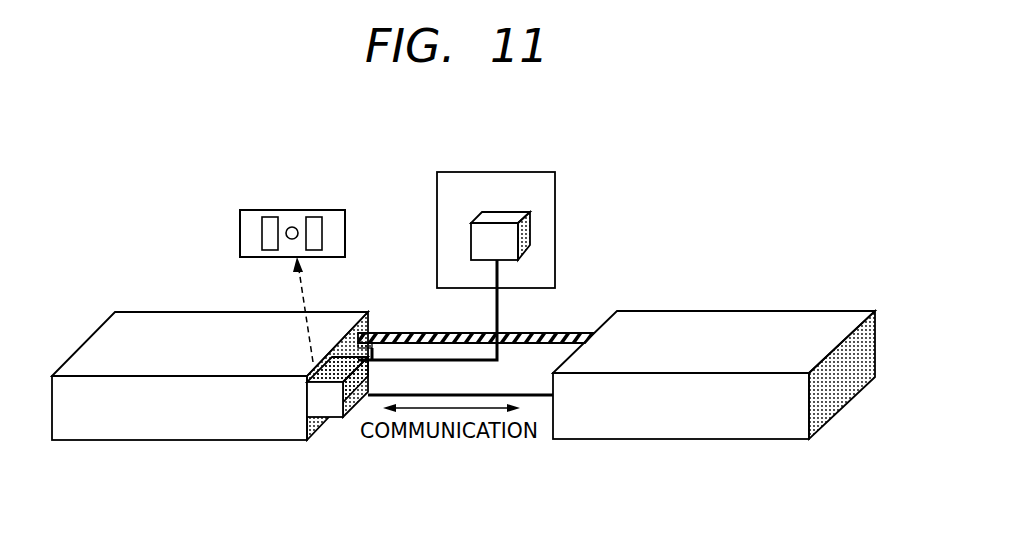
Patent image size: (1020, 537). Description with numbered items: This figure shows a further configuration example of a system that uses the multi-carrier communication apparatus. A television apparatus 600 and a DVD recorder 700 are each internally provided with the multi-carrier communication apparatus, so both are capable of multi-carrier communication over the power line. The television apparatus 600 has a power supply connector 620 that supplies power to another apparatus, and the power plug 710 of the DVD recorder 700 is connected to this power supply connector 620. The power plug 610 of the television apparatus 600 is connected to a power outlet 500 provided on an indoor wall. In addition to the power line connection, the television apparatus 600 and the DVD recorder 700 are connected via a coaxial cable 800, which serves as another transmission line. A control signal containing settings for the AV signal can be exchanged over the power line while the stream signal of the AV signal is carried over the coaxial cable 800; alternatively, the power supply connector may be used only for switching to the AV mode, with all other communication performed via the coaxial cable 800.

The television apparatus 600 is at (173, 428).
The power plug 610 is at (530, 227).
The power supply connector 620 is at (297, 210).
The power outlet 500 is at (498, 182).
The DVD recorder 700 is at (665, 427).
The power plug 710 is at (332, 408).
The coaxial cable 800 is at (538, 333).